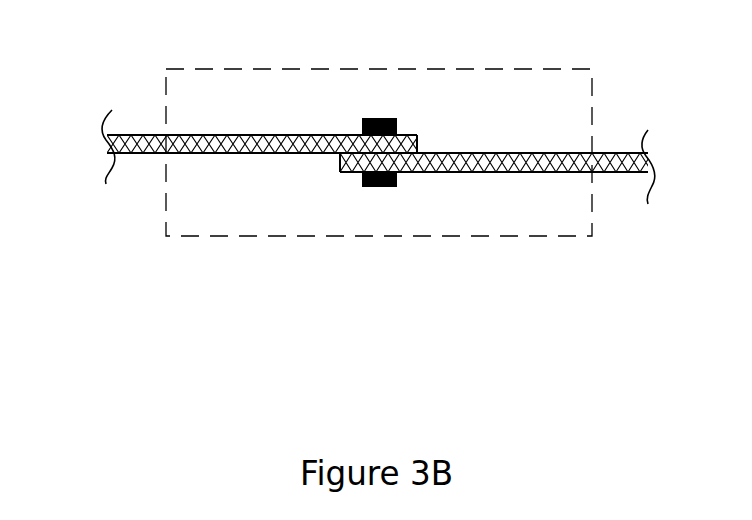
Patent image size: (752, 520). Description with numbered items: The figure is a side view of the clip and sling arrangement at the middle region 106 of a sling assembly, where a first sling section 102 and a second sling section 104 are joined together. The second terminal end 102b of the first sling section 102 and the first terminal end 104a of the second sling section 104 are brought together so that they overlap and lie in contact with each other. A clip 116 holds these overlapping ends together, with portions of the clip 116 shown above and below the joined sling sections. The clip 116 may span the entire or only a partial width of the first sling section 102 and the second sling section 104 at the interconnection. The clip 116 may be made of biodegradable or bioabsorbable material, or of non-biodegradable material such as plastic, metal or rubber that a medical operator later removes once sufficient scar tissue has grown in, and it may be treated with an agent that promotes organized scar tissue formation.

The first sling section 102 is at (128, 135).
The second sling section 104 is at (615, 153).
The second terminal end of the first sling section 102b is at (420, 142).
The first terminal end of the second sling section 104a is at (338, 157).
The clip 116 is at (368, 118).
The middle region 106 is at (592, 236).